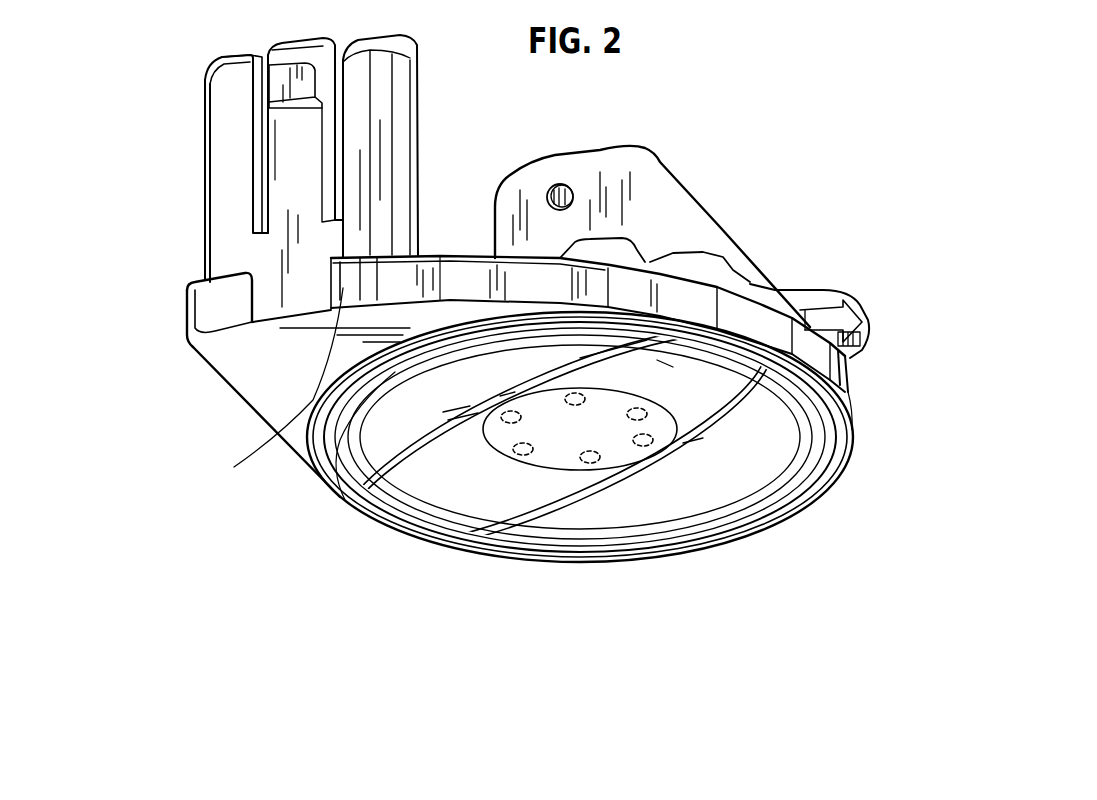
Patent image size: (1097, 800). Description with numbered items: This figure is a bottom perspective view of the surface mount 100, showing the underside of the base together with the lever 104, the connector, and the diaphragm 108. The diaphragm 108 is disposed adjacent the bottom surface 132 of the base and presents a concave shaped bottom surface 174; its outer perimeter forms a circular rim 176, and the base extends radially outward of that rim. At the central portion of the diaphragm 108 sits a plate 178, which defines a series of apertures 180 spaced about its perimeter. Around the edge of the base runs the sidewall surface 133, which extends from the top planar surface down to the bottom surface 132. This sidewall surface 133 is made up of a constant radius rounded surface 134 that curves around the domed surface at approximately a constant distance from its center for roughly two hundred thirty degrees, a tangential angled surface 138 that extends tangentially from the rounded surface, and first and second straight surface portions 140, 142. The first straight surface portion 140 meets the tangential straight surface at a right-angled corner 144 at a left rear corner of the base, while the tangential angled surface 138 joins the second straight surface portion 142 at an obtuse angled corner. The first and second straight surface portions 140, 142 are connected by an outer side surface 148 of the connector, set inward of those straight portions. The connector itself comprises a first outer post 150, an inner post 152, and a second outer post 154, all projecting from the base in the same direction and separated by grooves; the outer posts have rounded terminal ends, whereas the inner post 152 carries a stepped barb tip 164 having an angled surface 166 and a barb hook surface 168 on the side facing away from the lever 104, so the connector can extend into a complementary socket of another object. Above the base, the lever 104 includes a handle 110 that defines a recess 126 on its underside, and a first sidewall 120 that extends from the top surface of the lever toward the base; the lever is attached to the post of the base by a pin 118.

The surface mount 100 is at (880, 160).
The lever 104 is at (653, 150).
The diaphragm 108 is at (757, 460).
The handle 110 is at (817, 288).
The pin 118 is at (560, 183).
The first sidewall 120 is at (653, 193).
The recess 126 is at (872, 333).
The bottom surface 132 is at (247, 401).
The sidewall surface 133 is at (753, 315).
The constant radius rounded surface 134 is at (848, 393).
The tangential angled surface 138 is at (442, 272).
The first straight surface portion 140 is at (197, 347).
The second straight surface portion 142 is at (248, 397).
The right-angled corner 144 is at (205, 335).
The outer side surface 148 is at (240, 257).
The first outer post 150 is at (233, 217).
The inner post 152 is at (280, 175).
The second outer post 154 is at (360, 133).
The stepped barb tip 164 is at (290, 40).
The angled surface 166 is at (290, 58).
The barb hook surface 168 is at (270, 112).
The concave shaped bottom surface 174 is at (417, 462).
The circular rim 176 is at (322, 466).
The plate 178 is at (557, 443).
The apertures 180 is at (596, 462).